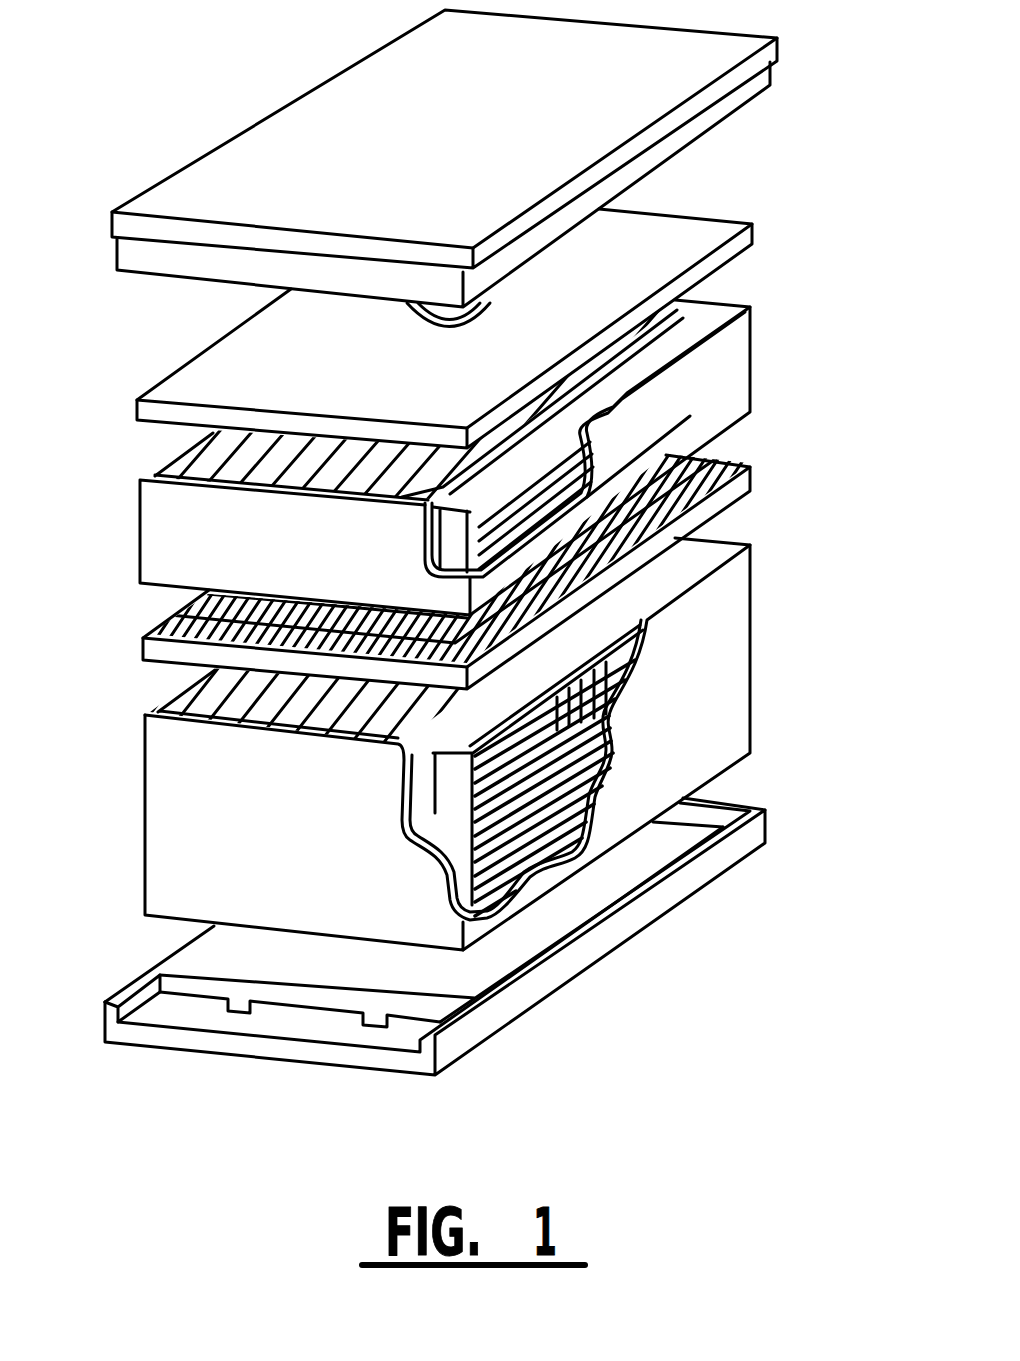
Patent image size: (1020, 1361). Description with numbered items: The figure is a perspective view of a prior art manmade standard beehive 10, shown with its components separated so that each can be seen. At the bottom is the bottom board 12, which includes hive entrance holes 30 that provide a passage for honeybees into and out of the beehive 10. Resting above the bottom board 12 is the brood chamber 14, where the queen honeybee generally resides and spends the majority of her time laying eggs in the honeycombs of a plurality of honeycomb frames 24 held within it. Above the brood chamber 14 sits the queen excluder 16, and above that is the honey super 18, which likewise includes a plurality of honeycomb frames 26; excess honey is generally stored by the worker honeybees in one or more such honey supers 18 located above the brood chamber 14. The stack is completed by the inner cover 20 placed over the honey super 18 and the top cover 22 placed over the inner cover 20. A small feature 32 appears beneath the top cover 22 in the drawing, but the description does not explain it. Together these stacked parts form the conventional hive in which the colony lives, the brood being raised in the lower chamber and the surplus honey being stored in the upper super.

The beehive 10 is at (243, 85).
The bottom board 12 is at (482, 1033).
The brood chamber 14 is at (730, 660).
The queen excluder 16 is at (752, 478).
The honey super 18 is at (737, 382).
The inner cover 20 is at (753, 240).
The top cover 22 is at (773, 82).
The honeycomb frames 24 is at (452, 786).
The honeycomb frames 26 is at (448, 484).
The hive entrance holes 30 is at (378, 1022).
The foot / protrusion 32 is at (495, 300).